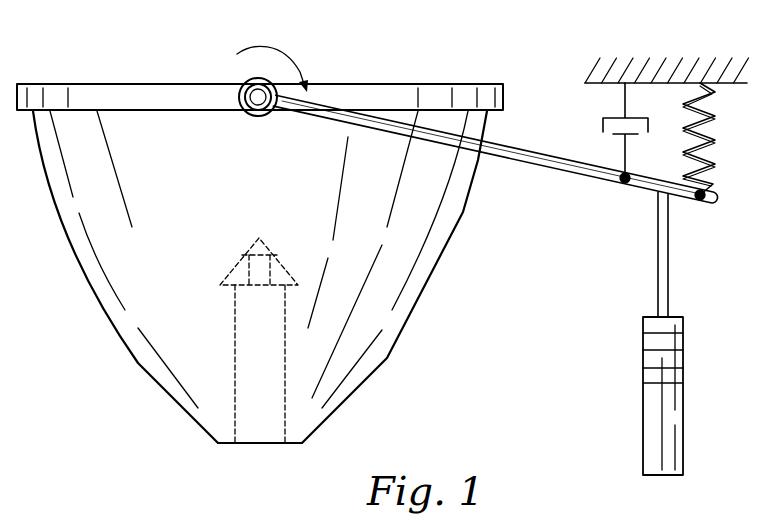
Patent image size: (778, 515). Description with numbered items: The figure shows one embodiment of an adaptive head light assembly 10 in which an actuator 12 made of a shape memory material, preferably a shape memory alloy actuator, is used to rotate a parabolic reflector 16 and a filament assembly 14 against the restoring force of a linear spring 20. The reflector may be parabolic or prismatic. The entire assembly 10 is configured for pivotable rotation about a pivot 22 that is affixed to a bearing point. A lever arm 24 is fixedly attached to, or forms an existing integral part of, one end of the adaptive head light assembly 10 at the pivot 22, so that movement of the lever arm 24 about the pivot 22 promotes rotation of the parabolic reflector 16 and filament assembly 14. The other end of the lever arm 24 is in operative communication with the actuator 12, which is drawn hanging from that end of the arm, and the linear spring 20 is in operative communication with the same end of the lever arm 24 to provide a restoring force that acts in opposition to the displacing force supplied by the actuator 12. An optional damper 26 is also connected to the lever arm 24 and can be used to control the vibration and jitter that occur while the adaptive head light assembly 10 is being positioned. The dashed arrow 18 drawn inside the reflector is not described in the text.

The adaptive head light assembly 10 is at (474, 49).
The actuator 12 is at (648, 420).
The filament assembly 14 is at (235, 370).
The parabolic reflector 16 is at (422, 289).
The load arrow head 18 is at (236, 281).
The linear spring 20 is at (714, 122).
The pivot 22 is at (252, 97).
The lever arm 24 is at (547, 166).
The damper 26 is at (611, 117).